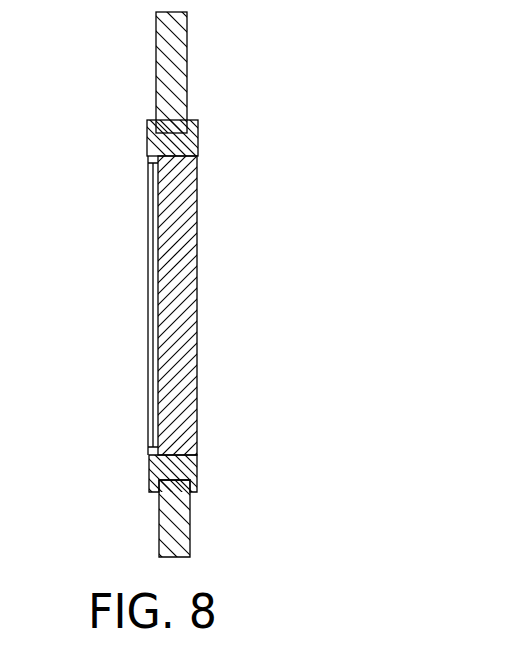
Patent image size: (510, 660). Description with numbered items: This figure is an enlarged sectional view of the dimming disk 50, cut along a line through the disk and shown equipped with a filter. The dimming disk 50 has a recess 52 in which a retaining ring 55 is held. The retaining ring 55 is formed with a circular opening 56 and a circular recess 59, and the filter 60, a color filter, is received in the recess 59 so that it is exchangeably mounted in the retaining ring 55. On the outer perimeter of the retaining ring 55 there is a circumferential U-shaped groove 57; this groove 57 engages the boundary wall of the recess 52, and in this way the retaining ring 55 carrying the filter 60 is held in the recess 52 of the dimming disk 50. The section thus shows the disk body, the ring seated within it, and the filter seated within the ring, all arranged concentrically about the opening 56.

The dimming disk 50 is at (157, 42).
The recess 52 is at (172, 469).
The retaining ring 55 is at (153, 156).
The circular opening 56 is at (157, 322).
The circumferential U-shaped groove 57 is at (175, 130).
The circular recess 59 is at (177, 165).
The filter 60 is at (171, 305).